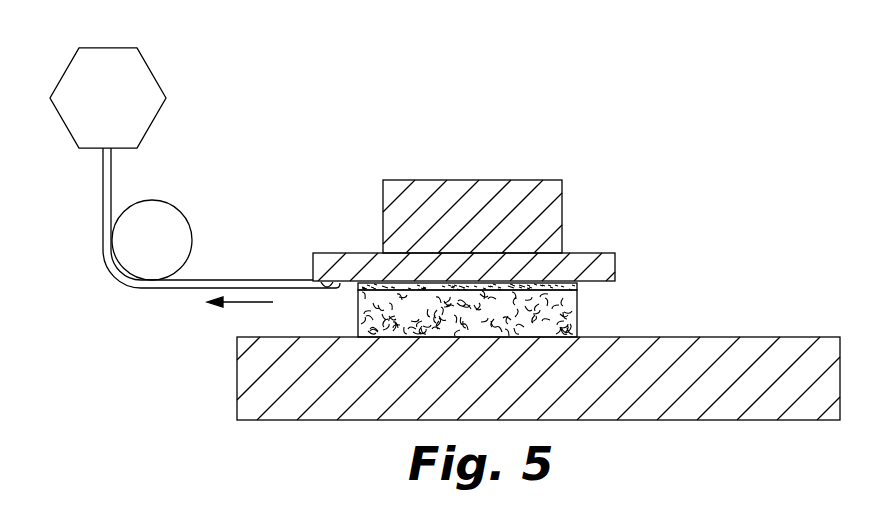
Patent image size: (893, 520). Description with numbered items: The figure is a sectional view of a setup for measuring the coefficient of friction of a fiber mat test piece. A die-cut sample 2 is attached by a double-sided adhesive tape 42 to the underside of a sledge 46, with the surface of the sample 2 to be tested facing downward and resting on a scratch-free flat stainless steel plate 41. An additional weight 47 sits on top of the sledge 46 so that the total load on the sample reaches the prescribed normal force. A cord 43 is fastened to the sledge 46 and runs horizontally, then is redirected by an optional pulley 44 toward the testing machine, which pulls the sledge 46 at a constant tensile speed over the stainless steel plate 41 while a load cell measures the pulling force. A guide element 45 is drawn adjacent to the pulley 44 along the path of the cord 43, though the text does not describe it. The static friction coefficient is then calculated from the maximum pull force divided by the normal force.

The sample 2 is at (565, 323).
The stainless steel plate 41 is at (750, 343).
The double-sided adhesive tape 42 is at (578, 286).
The cord 43 is at (244, 282).
The pulley 44 is at (146, 70).
The roller 45 is at (167, 214).
The sledge 46 is at (578, 262).
The additional weight 47 is at (460, 188).